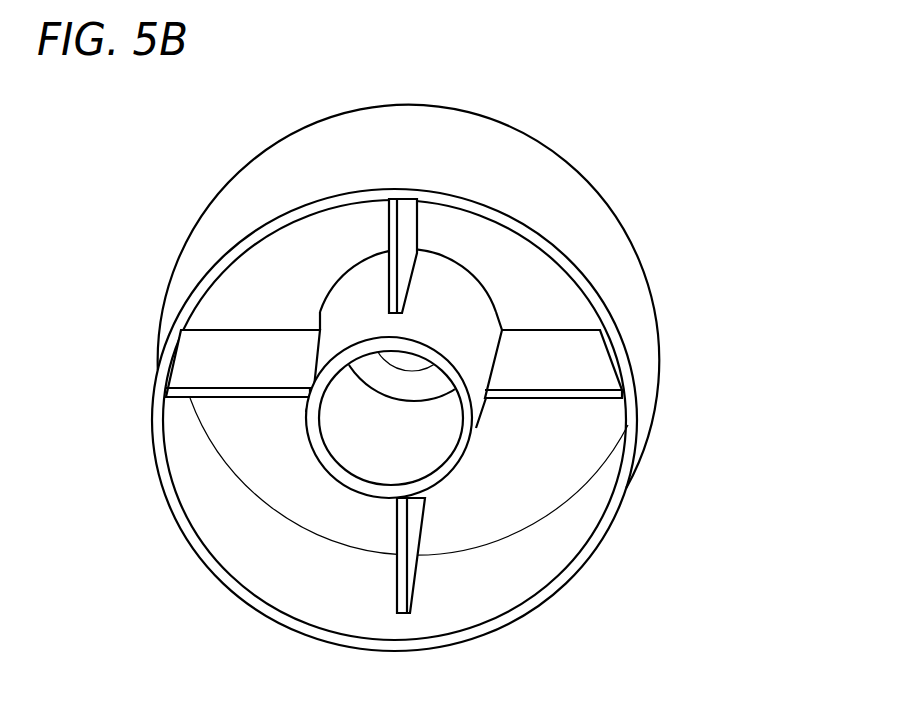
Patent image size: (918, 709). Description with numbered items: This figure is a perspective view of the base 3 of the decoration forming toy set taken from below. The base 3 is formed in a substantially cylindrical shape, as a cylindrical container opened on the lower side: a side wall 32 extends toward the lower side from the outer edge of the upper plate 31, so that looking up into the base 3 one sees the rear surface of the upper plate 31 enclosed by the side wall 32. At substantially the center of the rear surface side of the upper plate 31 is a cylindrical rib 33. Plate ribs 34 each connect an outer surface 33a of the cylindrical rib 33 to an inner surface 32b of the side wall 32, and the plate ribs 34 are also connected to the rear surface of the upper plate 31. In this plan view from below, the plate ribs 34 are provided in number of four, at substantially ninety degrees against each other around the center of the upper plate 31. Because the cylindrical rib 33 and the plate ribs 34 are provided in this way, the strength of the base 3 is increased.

The base 3 is at (711, 128).
The upper plate 31 is at (497, 247).
The side wall 32 is at (212, 232).
The inner surface 32b is at (580, 520).
The cylindrical rib 33 is at (338, 482).
The outer surface 33a is at (355, 296).
The plate rib 34 is at (408, 212).